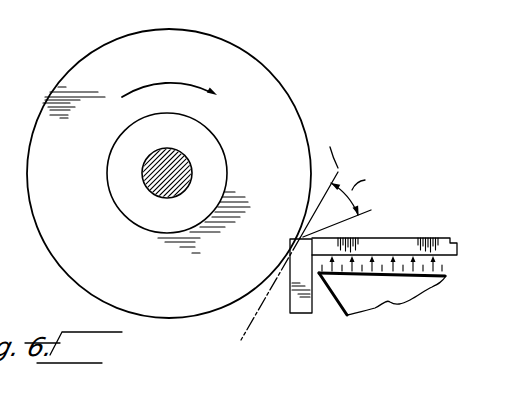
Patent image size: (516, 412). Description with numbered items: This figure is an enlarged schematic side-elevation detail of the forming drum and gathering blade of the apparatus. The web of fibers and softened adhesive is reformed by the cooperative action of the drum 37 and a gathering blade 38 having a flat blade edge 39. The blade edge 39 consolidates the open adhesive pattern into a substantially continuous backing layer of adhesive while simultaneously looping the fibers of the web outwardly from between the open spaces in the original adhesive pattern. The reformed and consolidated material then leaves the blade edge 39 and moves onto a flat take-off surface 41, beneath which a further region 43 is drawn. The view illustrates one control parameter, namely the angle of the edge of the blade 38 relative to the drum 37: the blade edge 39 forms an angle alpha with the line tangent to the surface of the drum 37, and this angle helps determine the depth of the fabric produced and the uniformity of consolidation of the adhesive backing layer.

The drum 37 is at (284, 108).
The gathering blade 38 is at (303, 313).
The blade edge 39 is at (300, 239).
The flat take-off surface 41 is at (398, 237).
The removed stock region 43 is at (392, 306).